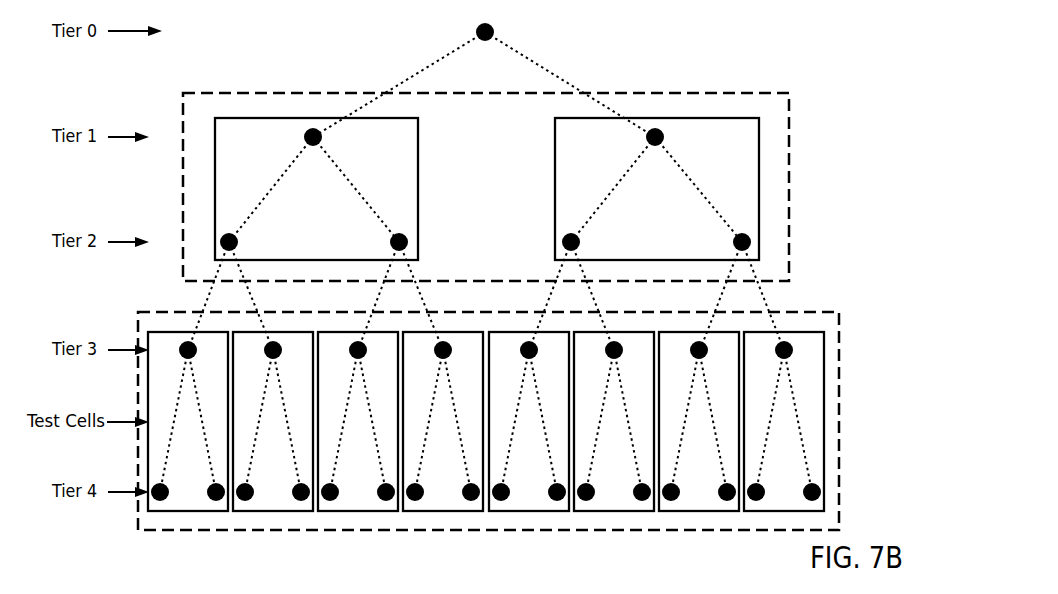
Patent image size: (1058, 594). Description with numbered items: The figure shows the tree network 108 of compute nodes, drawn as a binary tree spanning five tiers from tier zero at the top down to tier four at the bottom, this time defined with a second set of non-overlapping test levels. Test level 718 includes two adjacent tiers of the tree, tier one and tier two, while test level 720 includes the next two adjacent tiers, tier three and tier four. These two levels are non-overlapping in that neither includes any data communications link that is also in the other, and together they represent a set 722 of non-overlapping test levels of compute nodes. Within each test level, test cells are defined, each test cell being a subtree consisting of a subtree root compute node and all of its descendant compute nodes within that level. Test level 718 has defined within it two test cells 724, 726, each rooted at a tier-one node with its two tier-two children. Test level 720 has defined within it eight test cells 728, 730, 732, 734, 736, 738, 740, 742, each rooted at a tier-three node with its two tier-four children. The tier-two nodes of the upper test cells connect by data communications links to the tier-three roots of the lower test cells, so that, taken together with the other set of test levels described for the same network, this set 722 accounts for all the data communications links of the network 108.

The tree network 108 is at (633, 66).
The non-overlapping test level 718 is at (790, 103).
The non-overlapping test level 720 is at (840, 407).
The set of non-overlapping test levels 722 is at (840, 326).
The test cell 724 is at (332, 252).
The test cell 726 is at (673, 252).
The test cell 728 is at (203, 501).
The test cell 730 is at (288, 501).
The test cell 732 is at (373, 501).
The test cell 734 is at (458, 501).
The test cell 736 is at (544, 501).
The test cell 738 is at (629, 501).
The test cell 740 is at (714, 501).
The test cell 742 is at (799, 501).